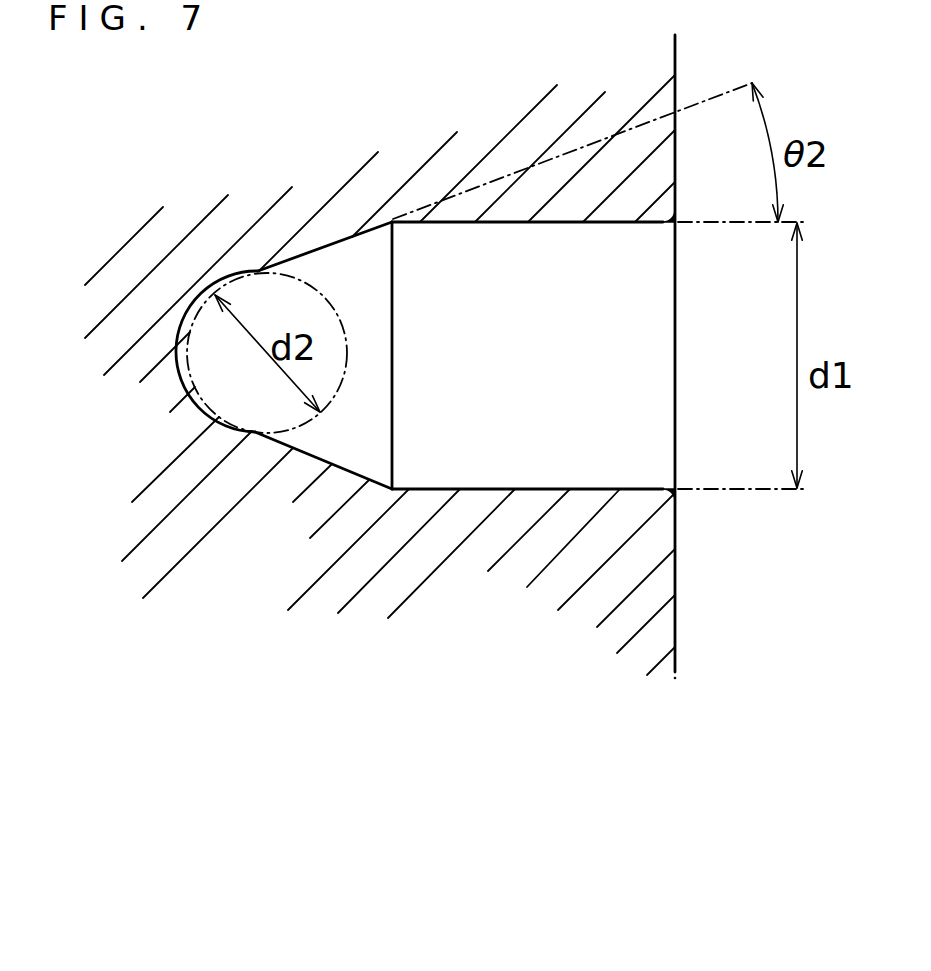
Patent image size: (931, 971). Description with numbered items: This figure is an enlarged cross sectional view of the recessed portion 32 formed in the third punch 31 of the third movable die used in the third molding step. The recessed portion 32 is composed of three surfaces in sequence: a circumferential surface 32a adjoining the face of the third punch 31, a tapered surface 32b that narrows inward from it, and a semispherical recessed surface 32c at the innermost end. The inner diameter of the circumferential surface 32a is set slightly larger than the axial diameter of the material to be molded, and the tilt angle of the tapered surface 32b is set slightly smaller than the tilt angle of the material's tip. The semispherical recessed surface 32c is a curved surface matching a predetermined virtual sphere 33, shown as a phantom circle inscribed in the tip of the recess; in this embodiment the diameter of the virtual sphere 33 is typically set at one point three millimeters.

The third punch 31 is at (652, 625).
The recessed portion 32 is at (384, 443).
The circumferential surface 32a is at (458, 488).
The tapered surface 32b is at (299, 449).
The semispherical recessed surface 32c is at (205, 395).
The virtual sphere 33 is at (340, 257).